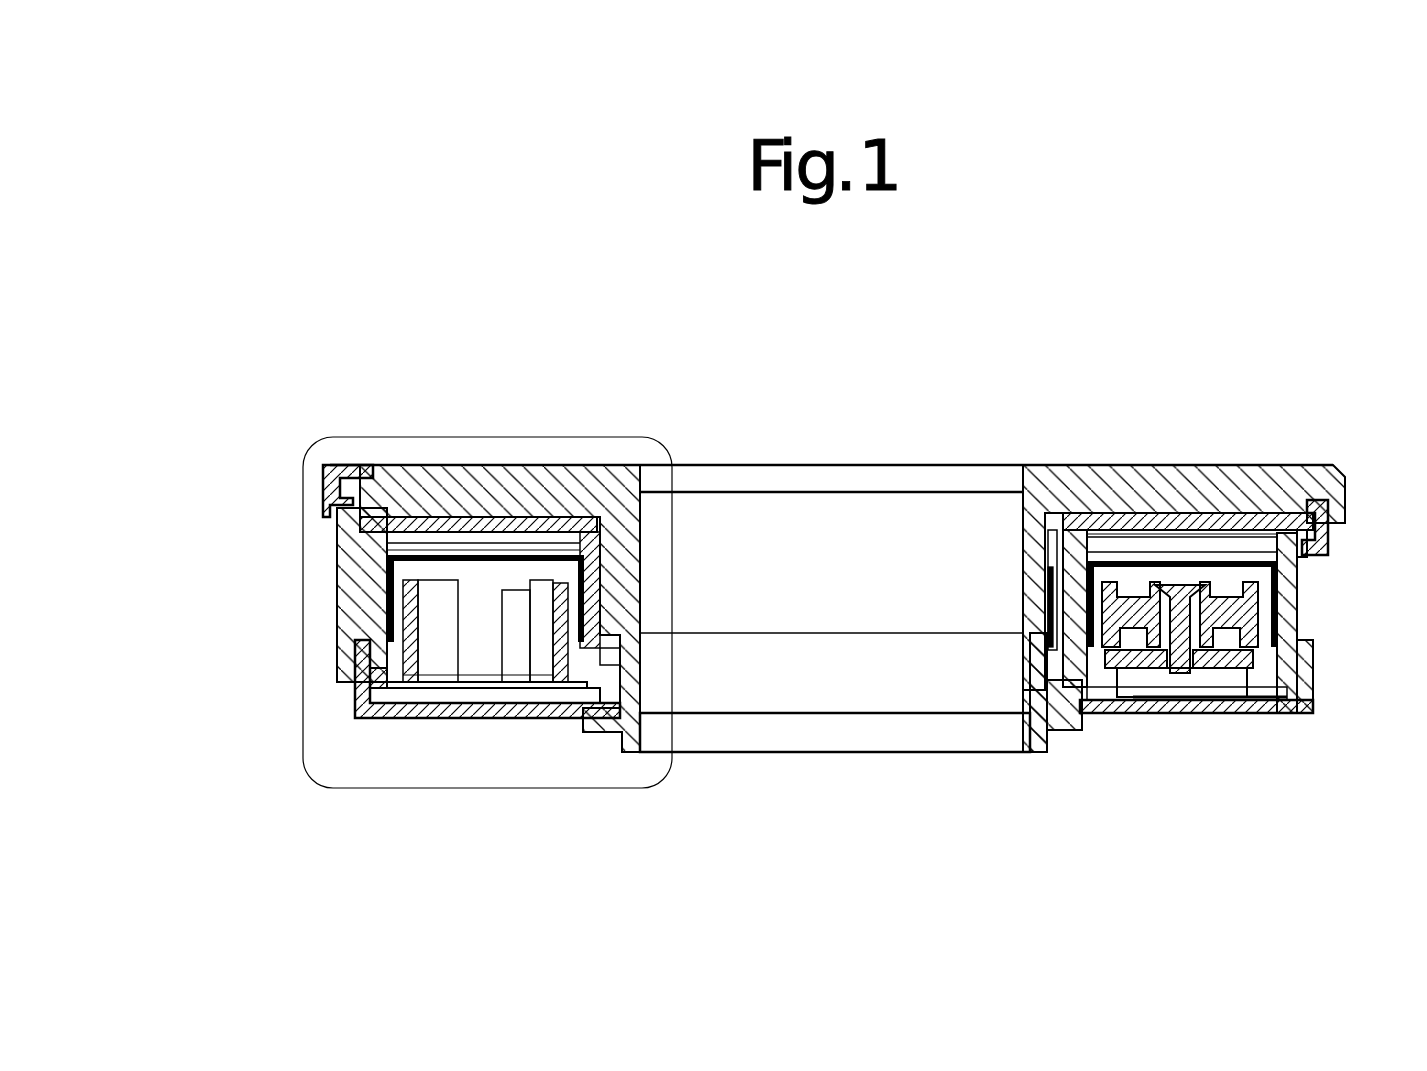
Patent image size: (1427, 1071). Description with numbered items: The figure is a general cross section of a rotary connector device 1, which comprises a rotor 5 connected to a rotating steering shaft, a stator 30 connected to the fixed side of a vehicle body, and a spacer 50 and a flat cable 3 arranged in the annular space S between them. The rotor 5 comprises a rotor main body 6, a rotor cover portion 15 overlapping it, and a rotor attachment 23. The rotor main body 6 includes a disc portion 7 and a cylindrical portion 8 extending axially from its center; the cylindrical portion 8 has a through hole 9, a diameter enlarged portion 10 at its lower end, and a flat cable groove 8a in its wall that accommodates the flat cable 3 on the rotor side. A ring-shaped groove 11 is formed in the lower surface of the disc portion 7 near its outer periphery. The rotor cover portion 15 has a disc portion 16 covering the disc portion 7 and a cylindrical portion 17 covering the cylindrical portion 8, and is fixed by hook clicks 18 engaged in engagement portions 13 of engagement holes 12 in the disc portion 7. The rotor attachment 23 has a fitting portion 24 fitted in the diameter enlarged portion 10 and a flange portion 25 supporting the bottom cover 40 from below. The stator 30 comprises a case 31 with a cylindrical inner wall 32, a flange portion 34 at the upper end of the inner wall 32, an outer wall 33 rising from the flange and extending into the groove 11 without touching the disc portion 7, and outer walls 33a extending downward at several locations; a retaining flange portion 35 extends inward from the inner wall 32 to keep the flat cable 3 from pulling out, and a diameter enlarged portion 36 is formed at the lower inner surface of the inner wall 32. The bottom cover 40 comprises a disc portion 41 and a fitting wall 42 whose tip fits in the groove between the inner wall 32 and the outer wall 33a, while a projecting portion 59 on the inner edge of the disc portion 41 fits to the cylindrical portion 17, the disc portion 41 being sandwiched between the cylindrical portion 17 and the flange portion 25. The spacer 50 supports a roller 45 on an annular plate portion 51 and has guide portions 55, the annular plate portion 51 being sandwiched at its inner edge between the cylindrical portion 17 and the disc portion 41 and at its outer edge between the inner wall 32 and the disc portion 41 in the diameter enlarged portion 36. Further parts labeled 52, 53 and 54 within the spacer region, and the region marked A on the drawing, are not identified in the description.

The rotary connector device 1 is at (945, 333).
The flat cable 3 is at (430, 540).
The rotor 5 is at (823, 347).
The rotor main body 6 is at (598, 465).
The disc portion 7 is at (1222, 530).
The cylindrical portion 8 is at (1048, 537).
The flat cable groove 8a is at (1080, 500).
The through hole 9 is at (1000, 500).
The diameter enlarged portion 10 is at (1023, 667).
The groove 11 is at (1337, 518).
The engagement holes 12 is at (383, 480).
The engagement portions 13 is at (320, 488).
The rotor cover portion 15 is at (643, 560).
The disc portion 16 is at (480, 480).
The cylindrical portion 17 is at (612, 650).
The hook clicks 18 is at (357, 475).
The rotor attachment 23 is at (640, 668).
The fitting portion 24 is at (1023, 640).
The flange portion 25 is at (1077, 727).
The stator 30 is at (165, 596).
The case 31 is at (337, 612).
The inner wall 32 is at (1300, 593).
The outer wall 33 is at (337, 578).
The outer walls 33a is at (337, 672).
The flange portion 34 is at (1298, 540).
The retaining flange portion 35 is at (1260, 545).
The diameter enlarged portion 36 is at (1293, 716).
The bottom cover 40 is at (358, 712).
The disc portion 41 is at (1155, 727).
The fitting wall 42 is at (1313, 687).
The roller 45 is at (1300, 568).
The spacer 50 is at (573, 703).
The annular plate portion 51 is at (1095, 718).
The base block 52 is at (1247, 720).
The pole piece 53 is at (1200, 697).
The core 54 is at (1180, 585).
The guide portions 55 is at (430, 628).
The projecting portion 59 is at (1023, 687).
The annular space S is at (487, 600).
The region A is at (330, 788).